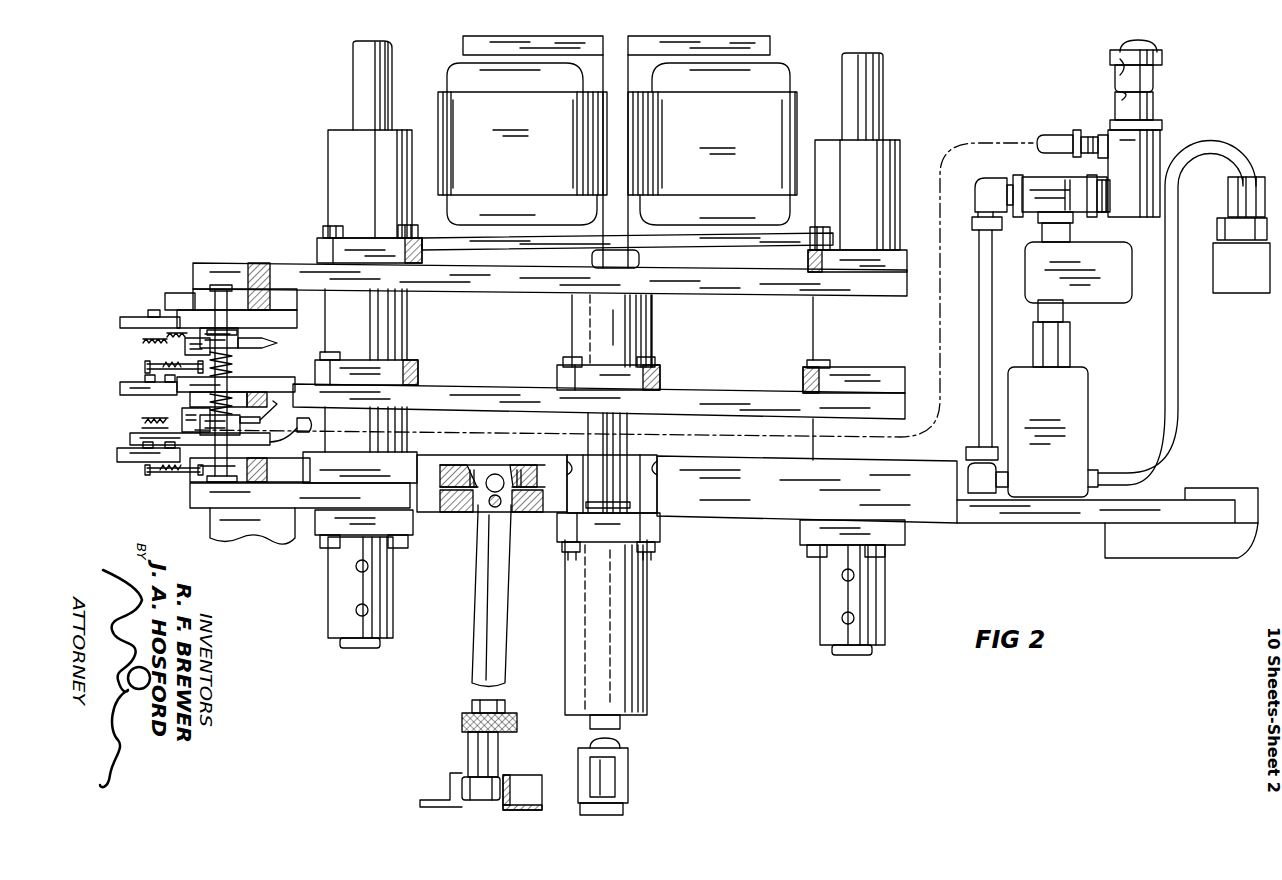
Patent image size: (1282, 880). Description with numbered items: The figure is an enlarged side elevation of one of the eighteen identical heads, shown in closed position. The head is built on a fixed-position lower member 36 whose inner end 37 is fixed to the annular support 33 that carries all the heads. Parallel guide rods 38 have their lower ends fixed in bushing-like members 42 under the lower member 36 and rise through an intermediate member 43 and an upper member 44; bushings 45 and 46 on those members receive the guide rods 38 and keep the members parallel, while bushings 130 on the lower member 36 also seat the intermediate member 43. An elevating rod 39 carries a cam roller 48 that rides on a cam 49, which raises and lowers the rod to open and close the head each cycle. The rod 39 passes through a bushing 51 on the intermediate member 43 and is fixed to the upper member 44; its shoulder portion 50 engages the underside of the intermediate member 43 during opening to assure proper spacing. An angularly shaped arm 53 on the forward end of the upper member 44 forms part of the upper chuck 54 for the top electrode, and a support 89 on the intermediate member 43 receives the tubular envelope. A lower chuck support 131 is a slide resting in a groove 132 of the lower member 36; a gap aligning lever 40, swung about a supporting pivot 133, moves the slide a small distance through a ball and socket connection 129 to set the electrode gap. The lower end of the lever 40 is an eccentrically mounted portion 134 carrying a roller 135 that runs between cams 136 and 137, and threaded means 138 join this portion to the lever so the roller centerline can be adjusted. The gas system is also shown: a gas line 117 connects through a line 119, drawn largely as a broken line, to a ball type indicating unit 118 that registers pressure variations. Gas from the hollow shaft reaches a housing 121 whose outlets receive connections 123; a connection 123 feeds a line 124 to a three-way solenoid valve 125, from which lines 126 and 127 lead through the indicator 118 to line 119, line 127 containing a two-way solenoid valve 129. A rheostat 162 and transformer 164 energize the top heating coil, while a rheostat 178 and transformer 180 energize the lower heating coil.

The annular support 33 is at (1103, 546).
The lower member 36 is at (719, 510).
The inner end 37 is at (1166, 498).
The guide rods 38 is at (355, 66).
The elevating rod 39 is at (623, 430).
The gap aligning lever 40 is at (478, 582).
The bushing-like members 42 is at (325, 582).
The intermediate member 43 is at (488, 388).
The upper member 44 is at (475, 288).
The bushings 45 is at (400, 314).
The bushings 46 is at (355, 150).
The cam roller 48 is at (616, 768).
The cam 49 is at (622, 806).
The shoulder portion 50 is at (630, 502).
The bushing 51 is at (640, 324).
The angularly shaped arm 53 is at (270, 324).
The upper chuck 54 is at (130, 304).
The support 89 is at (254, 378).
The gas line 117 is at (297, 412).
The ball type indicating unit 118 is at (1150, 108).
The line 119 is at (1050, 141).
The housing 121 is at (1239, 270).
The connections 123 is at (1255, 156).
The line 124 is at (1179, 386).
The three-way solenoid valve 125 is at (1068, 395).
The line 126 is at (985, 328).
The line 127 is at (1066, 318).
The two-way solenoid valve 129 is at (465, 526).
The bushings 130 is at (406, 431).
The lower chuck support 131 is at (455, 502).
The groove 132 is at (504, 480).
The supporting pivot 133 is at (503, 507).
The eccentrically mounted portion 134 is at (465, 748).
The roller 135 is at (488, 782).
The cam 136 is at (440, 784).
The cam 137 is at (523, 787).
The threaded means 138 is at (511, 718).
The rheostat 162 is at (466, 46).
The transformer 164 is at (452, 72).
The rheostat 178 is at (761, 47).
The transformer 180 is at (776, 82).